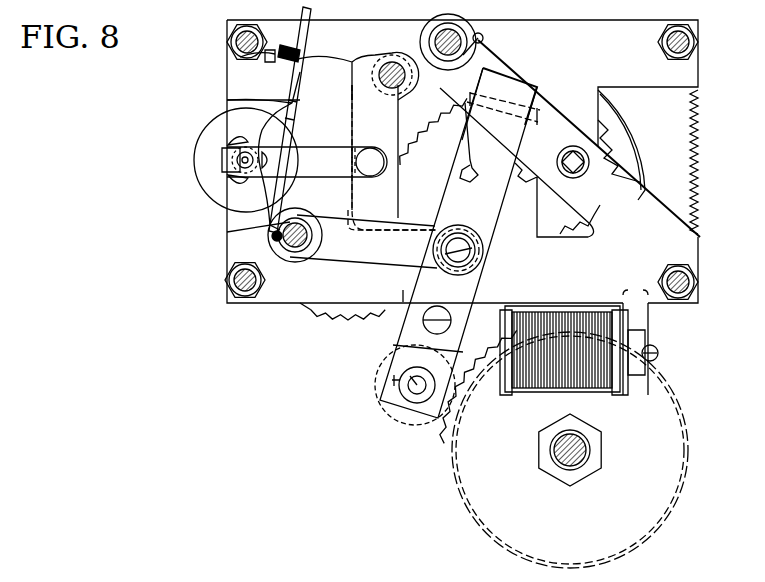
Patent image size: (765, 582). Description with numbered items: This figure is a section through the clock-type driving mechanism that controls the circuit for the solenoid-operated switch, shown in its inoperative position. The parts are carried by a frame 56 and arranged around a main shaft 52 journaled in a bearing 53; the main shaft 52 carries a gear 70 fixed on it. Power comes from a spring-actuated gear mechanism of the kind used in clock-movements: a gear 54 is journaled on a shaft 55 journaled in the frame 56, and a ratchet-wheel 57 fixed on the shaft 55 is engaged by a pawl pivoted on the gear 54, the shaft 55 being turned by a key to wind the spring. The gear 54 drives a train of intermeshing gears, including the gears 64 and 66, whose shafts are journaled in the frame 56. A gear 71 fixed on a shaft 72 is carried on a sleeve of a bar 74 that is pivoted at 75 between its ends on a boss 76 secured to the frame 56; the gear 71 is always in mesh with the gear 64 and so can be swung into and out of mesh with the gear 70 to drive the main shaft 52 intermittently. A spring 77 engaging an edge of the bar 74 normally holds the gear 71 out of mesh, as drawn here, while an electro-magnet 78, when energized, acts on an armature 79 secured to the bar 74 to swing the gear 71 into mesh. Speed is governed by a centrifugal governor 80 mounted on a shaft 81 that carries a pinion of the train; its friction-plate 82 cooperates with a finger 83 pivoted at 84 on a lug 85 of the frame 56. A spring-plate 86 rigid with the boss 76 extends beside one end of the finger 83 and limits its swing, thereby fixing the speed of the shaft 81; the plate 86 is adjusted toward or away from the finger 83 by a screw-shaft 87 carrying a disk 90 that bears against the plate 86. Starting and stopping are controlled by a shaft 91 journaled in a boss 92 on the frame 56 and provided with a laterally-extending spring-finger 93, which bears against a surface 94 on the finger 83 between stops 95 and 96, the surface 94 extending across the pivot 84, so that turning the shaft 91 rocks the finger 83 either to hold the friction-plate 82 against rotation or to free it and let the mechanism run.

The main shaft 52 is at (587, 462).
The bearing 53 is at (590, 450).
The gear 54 is at (690, 186).
The shaft 55 is at (570, 163).
The frame 56 is at (698, 72).
The ratchet-wheel 57 is at (580, 162).
The gear 64 is at (385, 305).
The gear 66 is at (325, 310).
The gear 70 is at (472, 490).
The gear 71 is at (410, 418).
The shaft 72 is at (414, 380).
The bar 74 is at (537, 87).
The pivot 75 is at (483, 242).
The boss 76 is at (437, 233).
The spring 77 is at (472, 67).
The electro-magnet 78 is at (572, 315).
The armature 79 is at (490, 296).
The centrifugal governor 80 is at (218, 158).
The shaft 81 is at (235, 152).
The friction-plate 82 is at (210, 195).
The finger 83 is at (277, 125).
The pivot 84 is at (240, 56).
The lug 85 is at (288, 48).
The spring-plate 86 is at (335, 255).
The screw-shaft 87 is at (275, 236).
The disk 90 is at (290, 263).
The shaft 91 is at (440, 45).
The boss 92 is at (400, 88).
The spring-finger 93 is at (365, 70).
The surface 94 is at (312, 45).
The stop 95 is at (290, 103).
The stop 96 is at (305, 22).